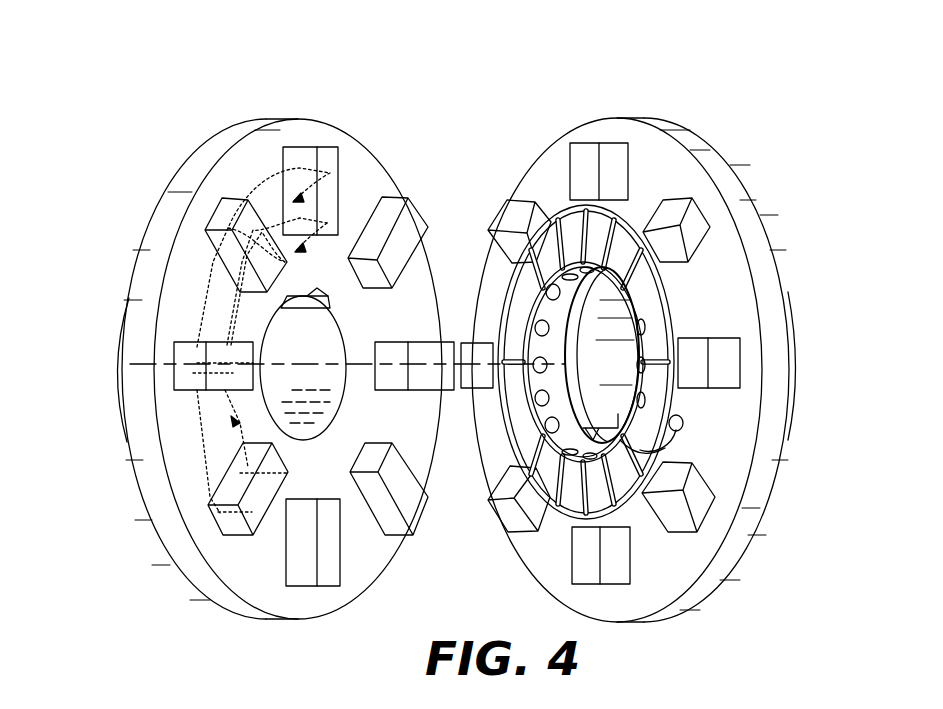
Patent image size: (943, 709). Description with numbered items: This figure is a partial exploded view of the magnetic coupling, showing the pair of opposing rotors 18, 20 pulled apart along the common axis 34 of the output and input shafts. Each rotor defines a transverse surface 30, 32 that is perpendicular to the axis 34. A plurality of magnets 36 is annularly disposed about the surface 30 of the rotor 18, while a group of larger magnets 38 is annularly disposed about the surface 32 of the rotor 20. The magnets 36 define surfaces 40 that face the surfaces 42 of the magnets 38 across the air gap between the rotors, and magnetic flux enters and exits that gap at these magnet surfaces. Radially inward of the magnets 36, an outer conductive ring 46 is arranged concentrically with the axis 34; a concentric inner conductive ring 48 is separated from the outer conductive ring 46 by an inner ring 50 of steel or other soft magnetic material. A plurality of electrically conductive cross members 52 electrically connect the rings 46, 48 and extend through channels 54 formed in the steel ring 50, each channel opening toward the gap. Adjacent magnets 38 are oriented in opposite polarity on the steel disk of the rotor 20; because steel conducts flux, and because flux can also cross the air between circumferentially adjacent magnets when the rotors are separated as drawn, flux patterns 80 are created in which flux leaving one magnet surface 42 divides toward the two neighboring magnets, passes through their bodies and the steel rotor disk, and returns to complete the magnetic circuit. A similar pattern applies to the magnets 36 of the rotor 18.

The rotor 18 is at (665, 120).
The rotor 20 is at (196, 150).
The transverse surface 30 is at (722, 268).
The transverse surface 32 is at (363, 156).
The axis 34 is at (315, 372).
The magnets 36 is at (587, 143).
The larger magnets 38 is at (415, 213).
The magnet surfaces 40 is at (667, 225).
The magnet surfaces 42 is at (328, 553).
The outer conductive ring 46 is at (703, 320).
The inner conductive ring 48 is at (643, 430).
The inner ring 50 is at (660, 457).
The cross members 52 is at (682, 425).
The channels 54 is at (517, 295).
The flux patterns 80 is at (207, 283).